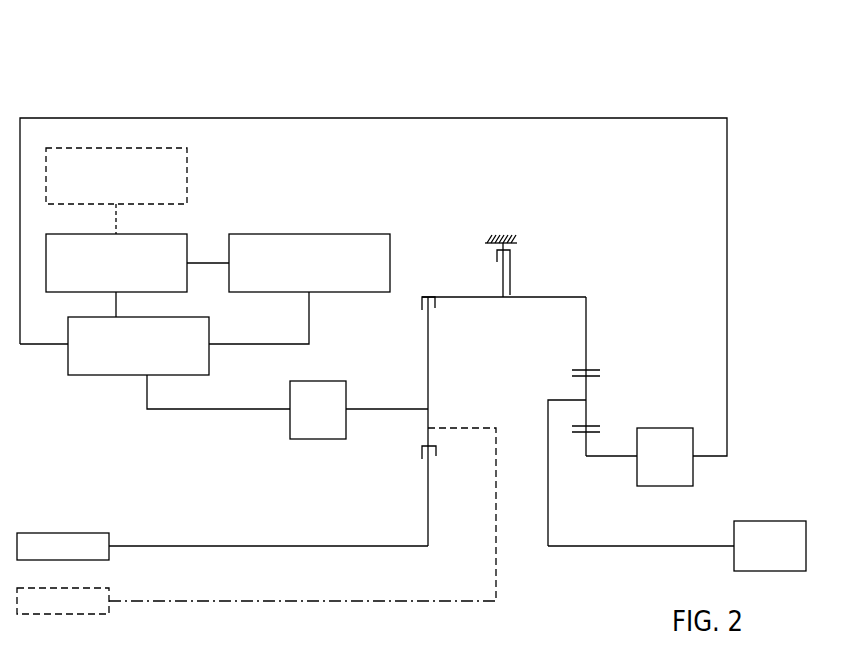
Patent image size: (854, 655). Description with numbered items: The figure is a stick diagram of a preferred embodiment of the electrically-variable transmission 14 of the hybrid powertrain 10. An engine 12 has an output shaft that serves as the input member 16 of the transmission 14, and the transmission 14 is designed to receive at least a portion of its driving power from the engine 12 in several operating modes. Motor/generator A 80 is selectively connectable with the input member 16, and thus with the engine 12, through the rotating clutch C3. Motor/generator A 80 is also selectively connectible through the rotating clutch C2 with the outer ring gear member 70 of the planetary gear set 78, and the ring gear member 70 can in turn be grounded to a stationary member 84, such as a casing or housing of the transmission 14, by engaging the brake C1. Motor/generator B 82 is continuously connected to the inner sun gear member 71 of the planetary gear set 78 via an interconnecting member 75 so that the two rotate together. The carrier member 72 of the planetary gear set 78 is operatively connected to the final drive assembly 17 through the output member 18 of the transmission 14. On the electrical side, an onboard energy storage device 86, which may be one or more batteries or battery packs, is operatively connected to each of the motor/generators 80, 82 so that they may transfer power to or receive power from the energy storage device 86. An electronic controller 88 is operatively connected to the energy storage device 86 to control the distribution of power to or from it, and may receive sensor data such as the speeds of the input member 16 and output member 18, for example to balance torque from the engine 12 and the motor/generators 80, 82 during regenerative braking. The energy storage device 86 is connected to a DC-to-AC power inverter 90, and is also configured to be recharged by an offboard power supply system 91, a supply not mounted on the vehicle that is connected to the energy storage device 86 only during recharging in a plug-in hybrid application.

The hybrid powertrain 10 is at (582, 74).
The engine 12 is at (78, 533).
The electrically-variable transmission 14 is at (442, 558).
The input member 16 is at (178, 546).
The final drive assembly 17 is at (763, 521).
The output member 18 is at (625, 548).
The outer ring gear member 70 is at (580, 366).
The inner sun gear member 71 is at (598, 438).
The carrier member 72 is at (561, 400).
The interconnecting member 75 is at (612, 458).
The planetary gear set 78 is at (606, 376).
The motor/generator A 80 is at (332, 381).
The motor/generator B 82 is at (681, 428).
The stationary member 84 is at (487, 238).
The energy storage device 86 is at (172, 234).
The controller 88 is at (356, 234).
The inverter 90 is at (112, 377).
The offboard power supply system 91 is at (190, 162).
The brake C1 is at (509, 275).
The clutch C2 is at (433, 319).
The clutch C3 is at (434, 471).